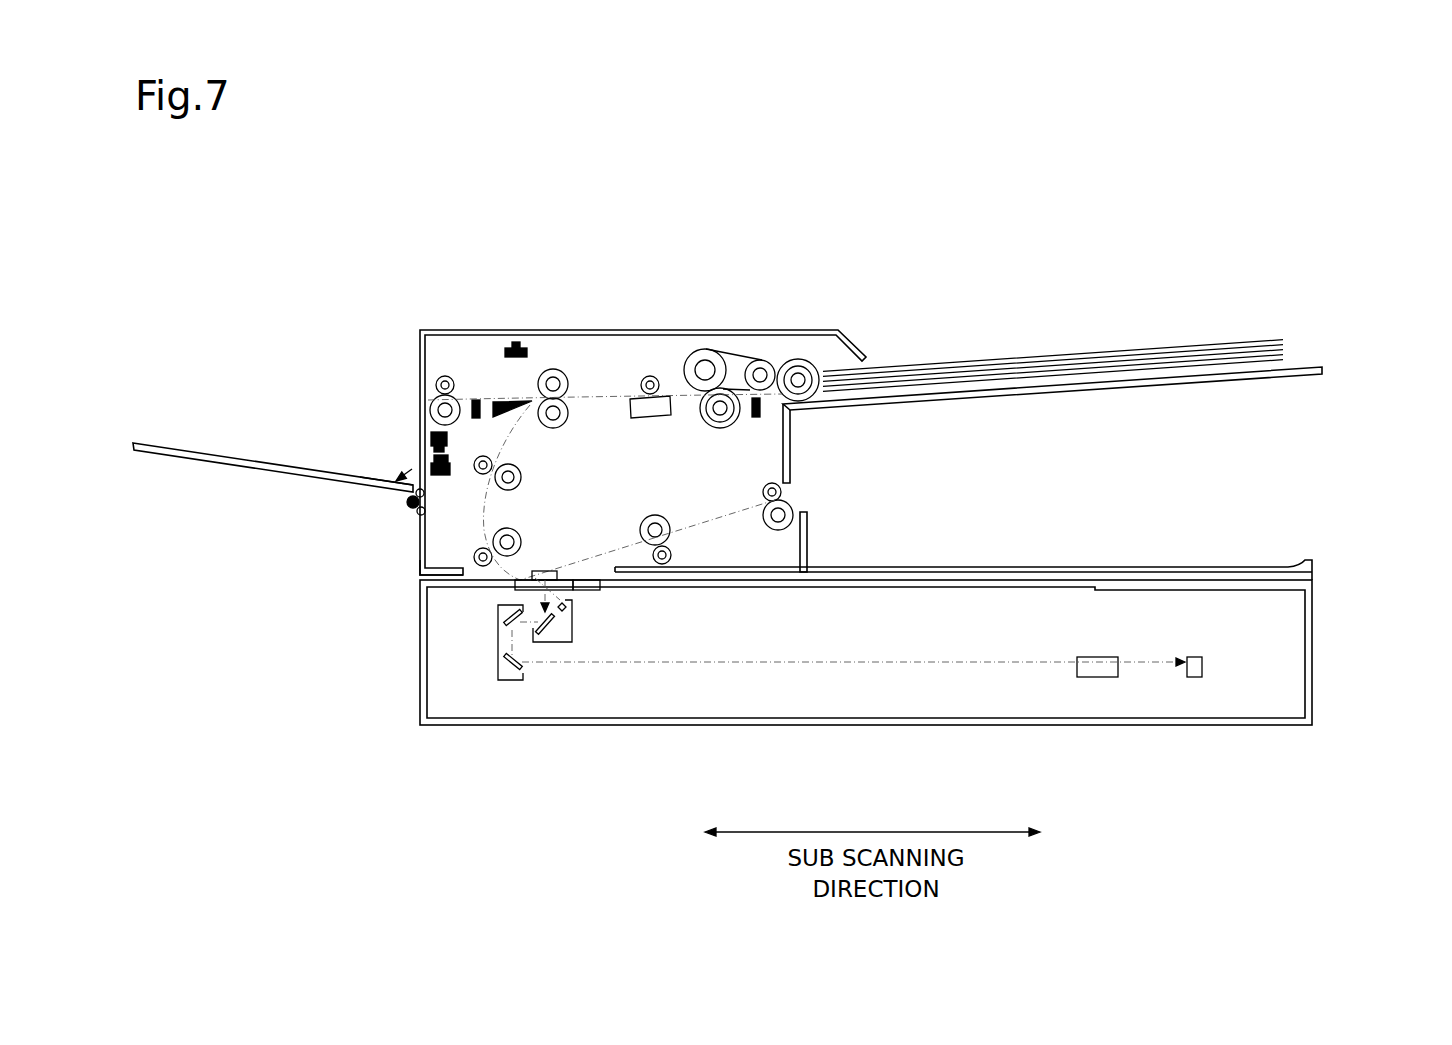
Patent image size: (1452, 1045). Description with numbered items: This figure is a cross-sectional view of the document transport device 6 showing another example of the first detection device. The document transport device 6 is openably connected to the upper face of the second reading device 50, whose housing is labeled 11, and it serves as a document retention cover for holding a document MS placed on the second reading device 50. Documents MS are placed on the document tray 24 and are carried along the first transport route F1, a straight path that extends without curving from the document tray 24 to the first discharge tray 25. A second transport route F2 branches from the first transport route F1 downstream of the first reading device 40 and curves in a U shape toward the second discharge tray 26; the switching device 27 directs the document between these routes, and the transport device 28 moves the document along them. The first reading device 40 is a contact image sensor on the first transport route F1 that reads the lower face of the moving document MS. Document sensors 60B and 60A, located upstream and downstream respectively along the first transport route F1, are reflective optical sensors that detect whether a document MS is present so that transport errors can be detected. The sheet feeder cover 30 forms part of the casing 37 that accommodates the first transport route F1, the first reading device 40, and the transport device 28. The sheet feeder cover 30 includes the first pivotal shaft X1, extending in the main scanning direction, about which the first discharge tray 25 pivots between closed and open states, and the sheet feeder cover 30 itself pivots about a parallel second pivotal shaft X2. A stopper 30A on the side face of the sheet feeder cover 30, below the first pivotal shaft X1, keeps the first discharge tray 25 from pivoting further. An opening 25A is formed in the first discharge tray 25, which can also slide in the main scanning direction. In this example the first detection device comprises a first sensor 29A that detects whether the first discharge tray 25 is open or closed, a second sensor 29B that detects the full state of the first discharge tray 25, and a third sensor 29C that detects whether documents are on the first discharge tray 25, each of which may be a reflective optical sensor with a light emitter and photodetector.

The document transport device 6 is at (427, 307).
The image reading apparatus main body 11 is at (1349, 654).
The document tray 24 is at (1322, 368).
The first discharge tray 25 is at (213, 460).
The opening 25A is at (361, 480).
The second discharge tray 26 is at (1208, 567).
The switching device 27 is at (513, 414).
The transport device 28 is at (609, 580).
The first sensor 29A is at (513, 343).
The second sensor 29B is at (431, 434).
The third sensor 29C is at (432, 468).
The sheet feeder cover 30 is at (672, 328).
The stopper 30A is at (410, 506).
The casing 37 is at (417, 567).
The first reading device 40 is at (652, 420).
The second reading device 50 is at (1282, 722).
The document sensor 60A is at (755, 420).
The document sensor 60B is at (476, 398).
The first transport route F1 is at (598, 395).
The second transport route F2 is at (728, 518).
The document MS is at (917, 372).
The first pivotal shaft X1 is at (425, 492).
The second pivotal shaft X2 is at (427, 511).